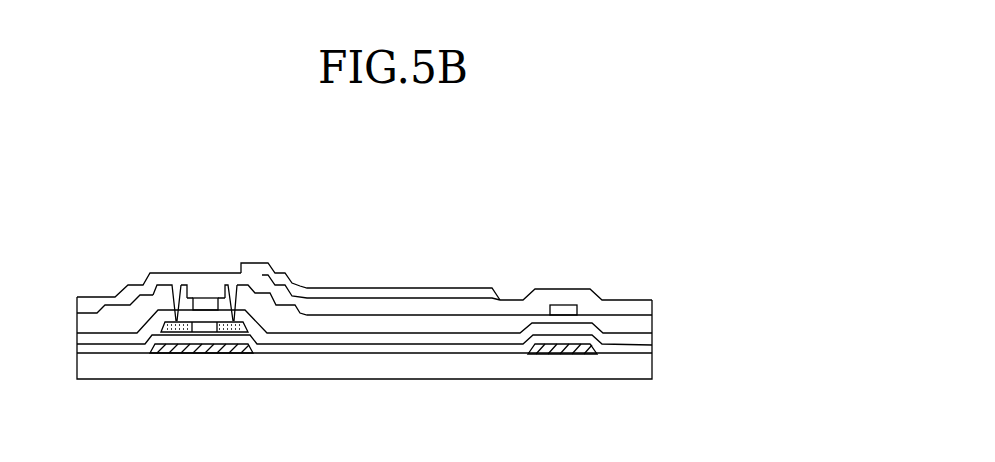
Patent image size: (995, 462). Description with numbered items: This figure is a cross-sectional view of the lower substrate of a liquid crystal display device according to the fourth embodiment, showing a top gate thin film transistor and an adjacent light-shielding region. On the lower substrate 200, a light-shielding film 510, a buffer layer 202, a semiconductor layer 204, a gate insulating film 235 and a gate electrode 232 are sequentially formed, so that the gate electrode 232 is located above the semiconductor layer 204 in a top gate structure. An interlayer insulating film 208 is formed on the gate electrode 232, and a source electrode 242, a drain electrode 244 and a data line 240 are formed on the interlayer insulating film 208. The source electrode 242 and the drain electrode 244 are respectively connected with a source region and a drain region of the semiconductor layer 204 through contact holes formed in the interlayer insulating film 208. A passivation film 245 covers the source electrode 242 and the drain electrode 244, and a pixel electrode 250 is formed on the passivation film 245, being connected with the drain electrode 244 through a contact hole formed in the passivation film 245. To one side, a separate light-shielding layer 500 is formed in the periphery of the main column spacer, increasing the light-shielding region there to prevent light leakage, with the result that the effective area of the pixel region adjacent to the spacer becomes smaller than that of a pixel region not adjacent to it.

The lower substrate 200 is at (645, 377).
The buffer layer 202 is at (645, 349).
The semiconductor layer 204 is at (175, 331).
The interlayer insulating film 208 is at (645, 322).
The gate electrode 232 is at (206, 303).
The gate insulating film 235 is at (645, 342).
The data line 240 is at (560, 310).
The source electrode 242 is at (143, 293).
The drain electrode 244 is at (268, 295).
The passivation film 245 is at (645, 305).
The pixel electrode 250 is at (388, 294).
The separate light-shielding layer 500 is at (565, 352).
The light-shielding film 510 is at (207, 349).